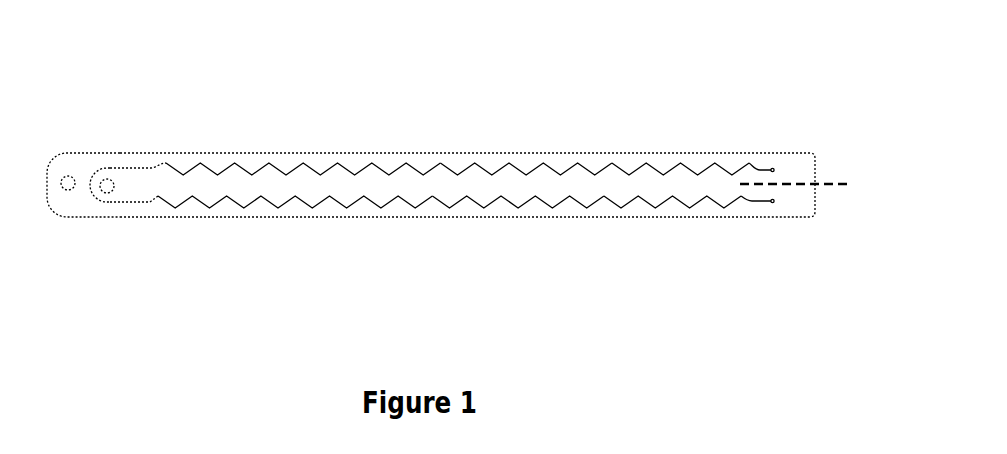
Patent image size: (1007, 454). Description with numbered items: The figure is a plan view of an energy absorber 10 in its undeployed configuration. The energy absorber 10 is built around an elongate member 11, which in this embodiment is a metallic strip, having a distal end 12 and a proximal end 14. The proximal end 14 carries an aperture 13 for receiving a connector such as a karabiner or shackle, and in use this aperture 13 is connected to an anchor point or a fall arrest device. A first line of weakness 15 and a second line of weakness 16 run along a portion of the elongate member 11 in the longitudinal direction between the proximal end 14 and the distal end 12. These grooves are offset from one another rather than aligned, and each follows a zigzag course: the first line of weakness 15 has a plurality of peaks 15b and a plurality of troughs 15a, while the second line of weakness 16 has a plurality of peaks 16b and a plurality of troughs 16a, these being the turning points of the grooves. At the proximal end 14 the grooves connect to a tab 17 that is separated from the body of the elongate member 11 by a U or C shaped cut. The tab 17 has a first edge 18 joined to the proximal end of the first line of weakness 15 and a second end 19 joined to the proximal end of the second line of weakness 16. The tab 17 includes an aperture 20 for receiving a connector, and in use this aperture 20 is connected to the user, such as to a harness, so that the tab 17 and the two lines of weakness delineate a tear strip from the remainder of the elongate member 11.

The energy absorber 10 is at (615, 59).
The elongate member 11 is at (563, 217).
The distal end 12 is at (803, 200).
The aperture 13 is at (66, 176).
The proximal end 14 is at (83, 160).
The first line of weakness 15 is at (499, 172).
The troughs 15a is at (698, 172).
The peaks 15b is at (373, 163).
The second line of weakness 16 is at (666, 197).
The troughs 16a is at (415, 208).
The peaks 16b is at (331, 196).
The tab 17 is at (97, 197).
The first edge 18 is at (132, 168).
The second end 19 is at (130, 200).
The aperture 20 is at (107, 192).